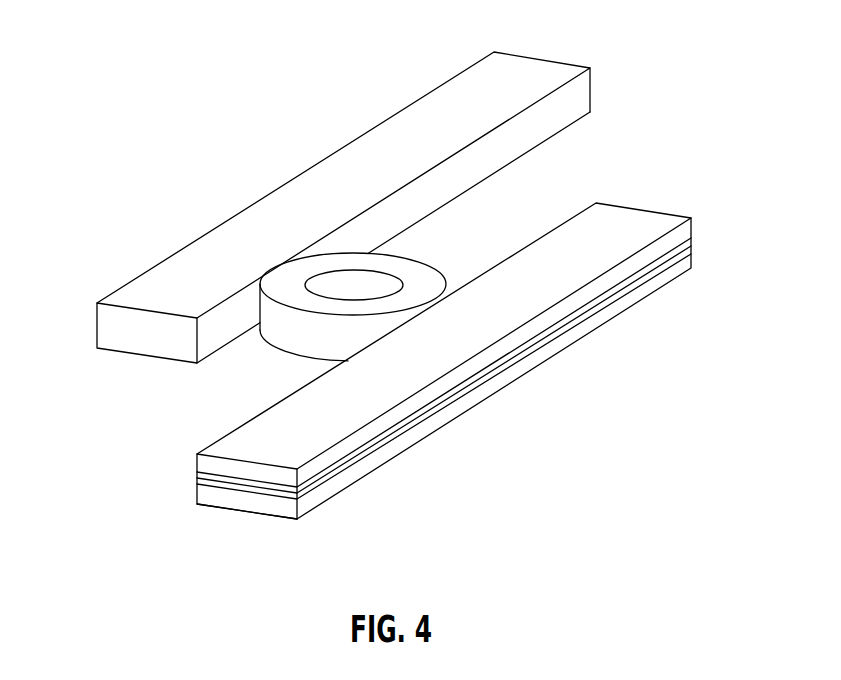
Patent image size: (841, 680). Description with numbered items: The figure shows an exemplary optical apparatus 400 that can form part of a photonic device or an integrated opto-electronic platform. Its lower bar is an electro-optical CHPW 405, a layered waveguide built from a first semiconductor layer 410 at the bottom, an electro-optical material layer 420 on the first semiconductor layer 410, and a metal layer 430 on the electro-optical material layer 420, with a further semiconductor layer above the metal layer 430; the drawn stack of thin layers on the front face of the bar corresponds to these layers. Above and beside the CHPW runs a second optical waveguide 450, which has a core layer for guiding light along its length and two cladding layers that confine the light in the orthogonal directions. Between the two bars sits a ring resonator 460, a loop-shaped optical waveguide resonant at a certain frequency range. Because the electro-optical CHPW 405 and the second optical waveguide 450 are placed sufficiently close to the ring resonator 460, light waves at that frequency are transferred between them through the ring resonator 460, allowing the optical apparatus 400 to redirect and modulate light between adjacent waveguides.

The optical apparatus 400 is at (106, 46).
The electro-optical CHPW 405 is at (395, 389).
The first semiconductor layer 410 is at (262, 503).
The electro-optical material layer 420 is at (197, 483).
The metal layer 430 is at (270, 485).
The second optical waveguide 450 is at (161, 237).
The ring resonator 460 is at (432, 284).